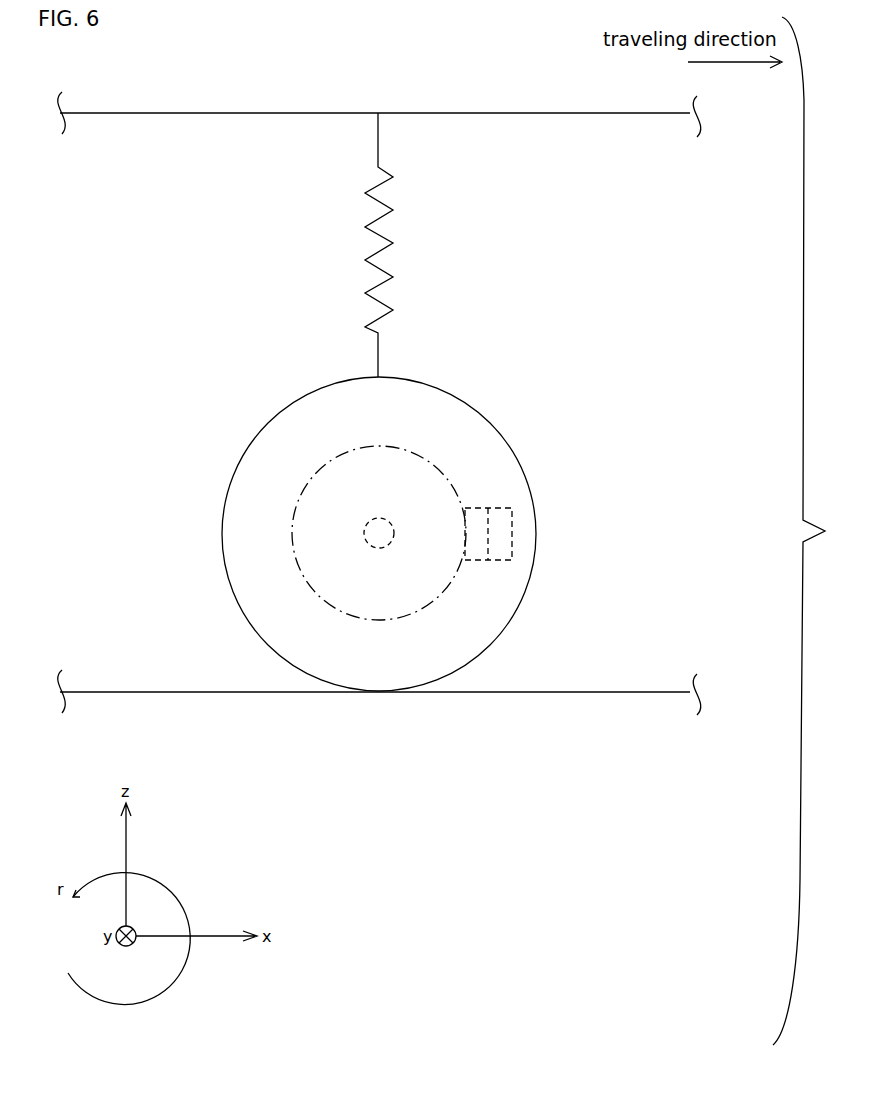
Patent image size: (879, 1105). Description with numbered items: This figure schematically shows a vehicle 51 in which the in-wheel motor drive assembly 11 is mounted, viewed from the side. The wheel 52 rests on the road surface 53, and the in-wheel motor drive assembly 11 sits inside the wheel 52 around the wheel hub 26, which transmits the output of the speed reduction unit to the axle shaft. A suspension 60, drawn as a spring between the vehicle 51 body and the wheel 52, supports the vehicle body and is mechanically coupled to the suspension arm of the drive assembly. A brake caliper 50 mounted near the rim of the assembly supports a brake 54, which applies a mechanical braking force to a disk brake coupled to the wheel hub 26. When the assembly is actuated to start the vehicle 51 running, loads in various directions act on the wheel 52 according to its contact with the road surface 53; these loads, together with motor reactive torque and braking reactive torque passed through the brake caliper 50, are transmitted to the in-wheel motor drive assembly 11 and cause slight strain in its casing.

The in-wheel motor drive assembly 11 is at (297, 505).
The wheel hub 26 is at (364, 533).
The brake caliper 50 is at (473, 508).
The vehicle 51 is at (627, 116).
The wheel 52 is at (517, 612).
The road surface 53 is at (117, 690).
The brake 54 is at (500, 535).
The suspension 60 is at (409, 248).